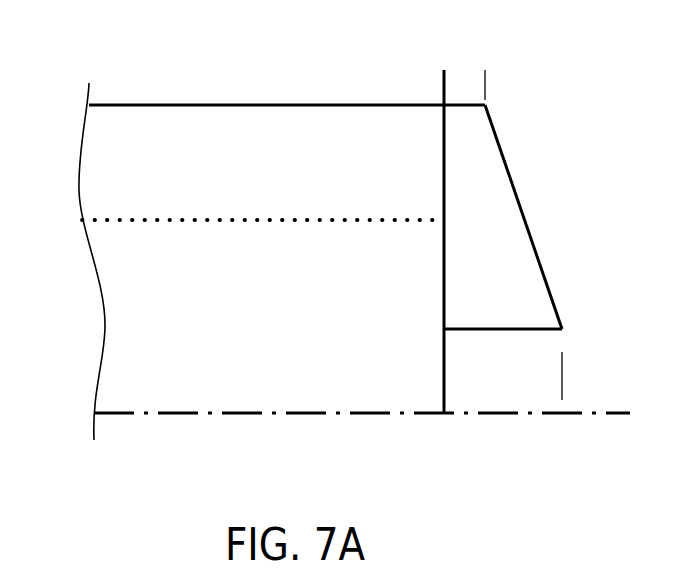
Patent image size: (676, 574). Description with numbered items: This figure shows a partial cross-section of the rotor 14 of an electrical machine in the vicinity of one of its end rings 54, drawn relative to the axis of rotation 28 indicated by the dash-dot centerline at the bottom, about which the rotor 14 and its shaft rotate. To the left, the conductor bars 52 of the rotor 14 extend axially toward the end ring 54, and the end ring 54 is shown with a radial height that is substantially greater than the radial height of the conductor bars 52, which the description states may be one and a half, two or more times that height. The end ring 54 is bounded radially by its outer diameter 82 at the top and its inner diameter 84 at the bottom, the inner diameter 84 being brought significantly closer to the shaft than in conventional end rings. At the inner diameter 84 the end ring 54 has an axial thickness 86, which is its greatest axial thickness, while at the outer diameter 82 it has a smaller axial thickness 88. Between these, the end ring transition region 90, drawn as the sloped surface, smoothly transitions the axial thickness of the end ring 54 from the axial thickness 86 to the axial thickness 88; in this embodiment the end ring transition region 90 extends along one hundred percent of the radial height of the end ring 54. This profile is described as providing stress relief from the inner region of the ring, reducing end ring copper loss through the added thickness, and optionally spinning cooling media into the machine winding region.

The rotor 14 is at (106, 54).
The axis of rotation 28 is at (497, 415).
The conductor bars 52 is at (283, 178).
The end ring 54 is at (519, 278).
The outer diameter 82 is at (464, 104).
The inner diameter 84 is at (538, 331).
The axial thickness at inner diameter 86 is at (551, 375).
The axial thickness at outer diameter 88 is at (494, 85).
The end ring transition region 90 is at (555, 208).